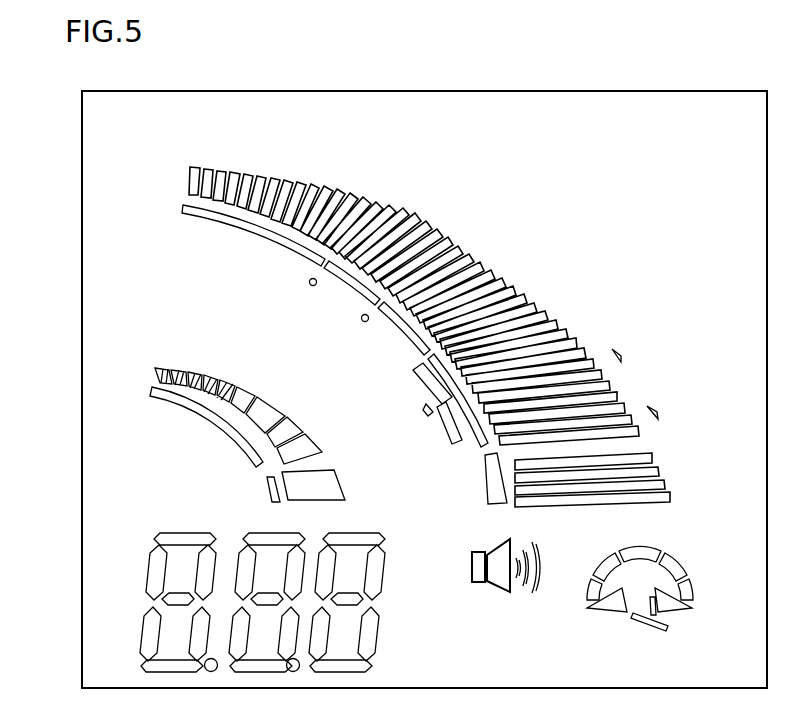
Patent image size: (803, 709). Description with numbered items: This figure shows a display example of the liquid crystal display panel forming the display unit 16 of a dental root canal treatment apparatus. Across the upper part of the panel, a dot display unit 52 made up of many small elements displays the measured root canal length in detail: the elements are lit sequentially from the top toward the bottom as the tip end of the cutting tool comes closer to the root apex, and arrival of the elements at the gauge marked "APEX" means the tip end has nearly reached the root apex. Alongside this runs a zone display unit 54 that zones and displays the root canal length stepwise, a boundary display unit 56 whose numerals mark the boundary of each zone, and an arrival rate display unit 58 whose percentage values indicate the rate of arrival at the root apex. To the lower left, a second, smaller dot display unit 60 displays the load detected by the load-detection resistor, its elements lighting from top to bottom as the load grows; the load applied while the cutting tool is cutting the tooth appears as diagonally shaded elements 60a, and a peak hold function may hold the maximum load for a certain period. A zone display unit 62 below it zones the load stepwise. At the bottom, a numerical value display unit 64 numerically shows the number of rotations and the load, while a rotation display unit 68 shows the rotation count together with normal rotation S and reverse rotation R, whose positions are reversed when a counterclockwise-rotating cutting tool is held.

The display unit 16 is at (432, 91).
The dot display unit 52 is at (186, 172).
The zone display unit 54 is at (183, 216).
The boundary display unit 56 is at (283, 298).
The arrival rate display unit 58 is at (256, 332).
The dot display unit 60 is at (217, 398).
The diagonally shaded elements 60a is at (201, 368).
The zone display unit 62 is at (152, 390).
The numerical value display unit 64 is at (157, 533).
The rotation display unit 68 is at (700, 560).